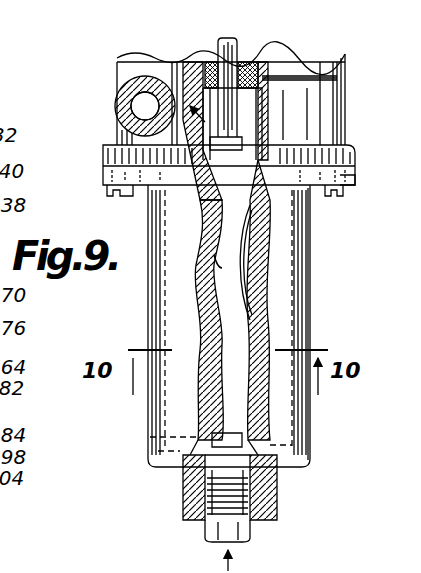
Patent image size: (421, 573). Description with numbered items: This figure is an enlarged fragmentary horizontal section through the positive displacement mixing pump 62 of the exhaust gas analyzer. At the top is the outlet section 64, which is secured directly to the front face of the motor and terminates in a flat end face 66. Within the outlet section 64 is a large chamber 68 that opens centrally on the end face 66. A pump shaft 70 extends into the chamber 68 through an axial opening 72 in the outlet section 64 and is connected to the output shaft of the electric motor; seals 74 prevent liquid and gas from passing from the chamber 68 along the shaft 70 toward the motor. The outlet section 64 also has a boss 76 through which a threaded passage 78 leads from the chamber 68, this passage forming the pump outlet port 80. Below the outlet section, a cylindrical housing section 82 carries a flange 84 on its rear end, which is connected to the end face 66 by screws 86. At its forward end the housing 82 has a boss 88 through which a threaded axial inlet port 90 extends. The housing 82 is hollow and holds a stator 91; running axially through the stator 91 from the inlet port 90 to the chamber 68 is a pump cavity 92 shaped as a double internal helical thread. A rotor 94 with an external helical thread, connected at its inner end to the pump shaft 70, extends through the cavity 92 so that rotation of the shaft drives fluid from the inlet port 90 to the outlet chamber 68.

The pump 62 is at (313, 264).
The outlet section 64 is at (345, 92).
The end face 66 is at (355, 172).
The chamber 68 is at (257, 111).
The pump shaft 70 is at (228, 38).
The axial opening 72 is at (247, 74).
The seals 74 is at (262, 80).
The boss 76 is at (138, 80).
The threaded passage 78 is at (196, 92).
The pump outlet port 80 is at (134, 107).
The cylindrical housing section 82 is at (311, 314).
The flange 84 is at (348, 184).
The screws 86 is at (110, 192).
The boss 88 is at (183, 503).
The threaded axial inlet port 90 is at (265, 510).
The stator 91 is at (200, 329).
The pump chamber or cavity 92 is at (222, 264).
The rotor 94 is at (250, 262).